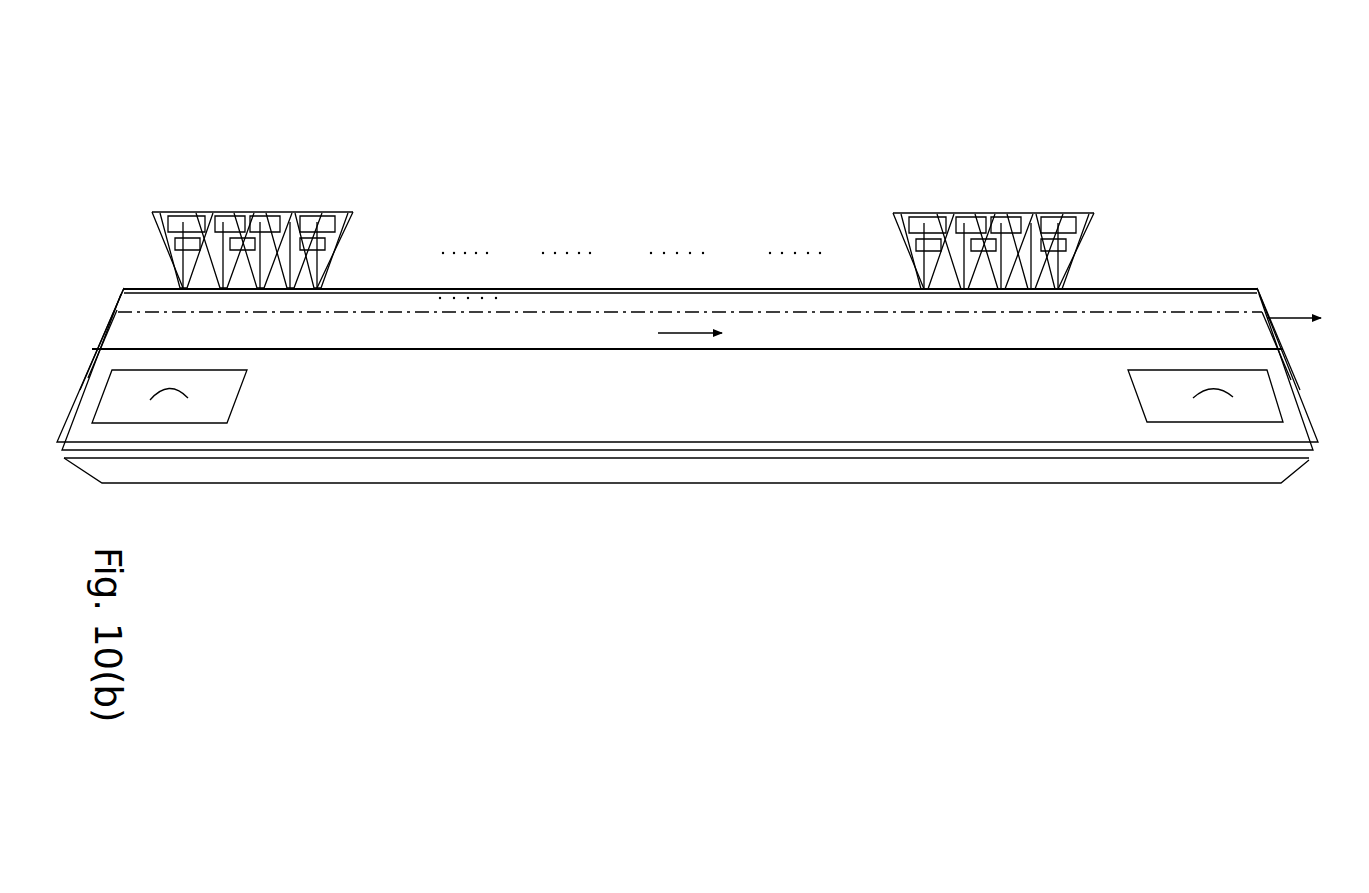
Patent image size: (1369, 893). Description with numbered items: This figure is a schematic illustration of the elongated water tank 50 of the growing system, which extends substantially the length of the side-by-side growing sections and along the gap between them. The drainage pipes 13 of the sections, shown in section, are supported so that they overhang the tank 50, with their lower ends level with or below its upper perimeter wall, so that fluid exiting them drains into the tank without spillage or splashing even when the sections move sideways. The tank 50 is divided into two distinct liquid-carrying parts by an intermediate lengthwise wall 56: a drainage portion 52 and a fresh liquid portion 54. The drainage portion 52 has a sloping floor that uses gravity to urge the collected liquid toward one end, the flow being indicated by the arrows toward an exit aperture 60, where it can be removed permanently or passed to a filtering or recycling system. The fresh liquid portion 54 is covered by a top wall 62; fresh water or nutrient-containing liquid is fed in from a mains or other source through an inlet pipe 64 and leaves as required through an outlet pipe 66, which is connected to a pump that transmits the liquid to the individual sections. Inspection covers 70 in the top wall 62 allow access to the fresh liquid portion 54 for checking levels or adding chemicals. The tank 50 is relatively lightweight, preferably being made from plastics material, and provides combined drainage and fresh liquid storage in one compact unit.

The drainage pipes 13 is at (259, 206).
The tank 50 is at (1002, 482).
The drainage portion 52 is at (625, 328).
The fresh liquid portion 54 is at (466, 425).
The intermediate lengthwise wall 56 is at (852, 343).
The exit aperture 60 is at (1294, 285).
The top wall 62 is at (707, 411).
The inlet pipe 64 is at (90, 378).
The outlet pipe 66 is at (1300, 383).
The inspection covers 70 is at (198, 400).